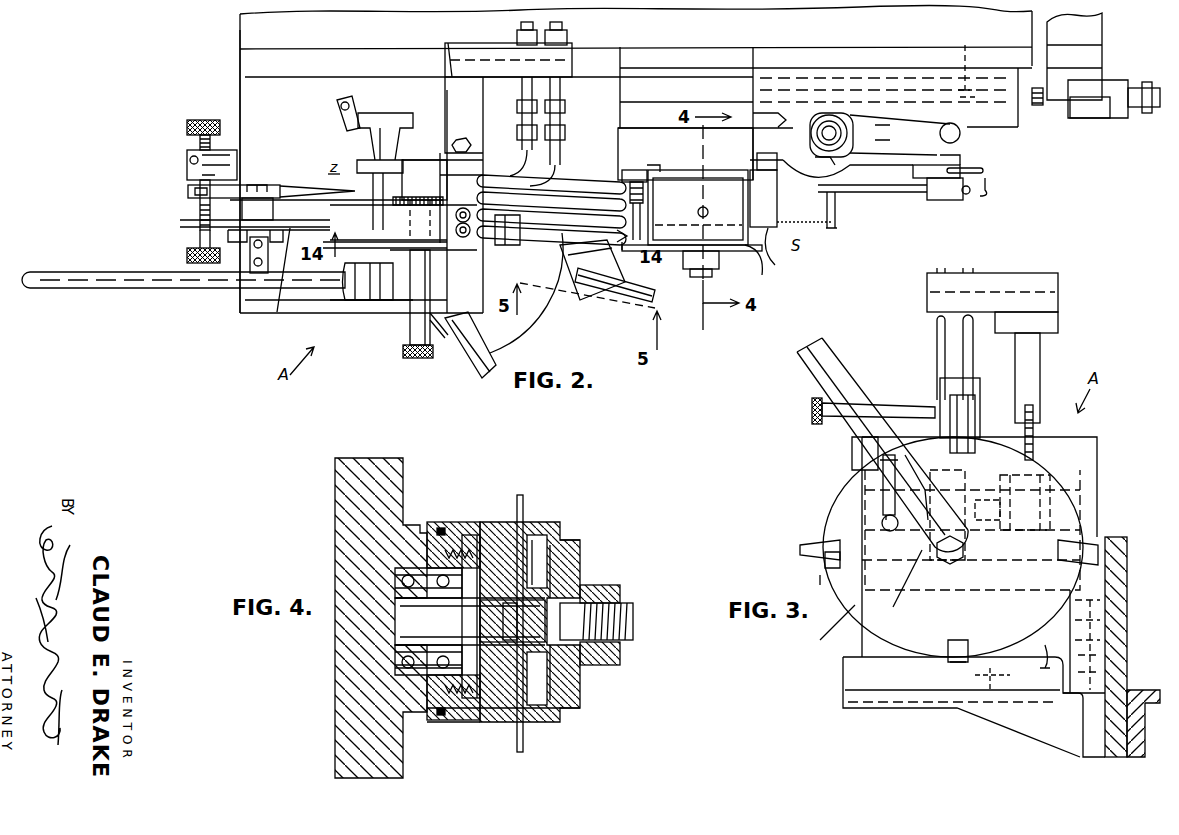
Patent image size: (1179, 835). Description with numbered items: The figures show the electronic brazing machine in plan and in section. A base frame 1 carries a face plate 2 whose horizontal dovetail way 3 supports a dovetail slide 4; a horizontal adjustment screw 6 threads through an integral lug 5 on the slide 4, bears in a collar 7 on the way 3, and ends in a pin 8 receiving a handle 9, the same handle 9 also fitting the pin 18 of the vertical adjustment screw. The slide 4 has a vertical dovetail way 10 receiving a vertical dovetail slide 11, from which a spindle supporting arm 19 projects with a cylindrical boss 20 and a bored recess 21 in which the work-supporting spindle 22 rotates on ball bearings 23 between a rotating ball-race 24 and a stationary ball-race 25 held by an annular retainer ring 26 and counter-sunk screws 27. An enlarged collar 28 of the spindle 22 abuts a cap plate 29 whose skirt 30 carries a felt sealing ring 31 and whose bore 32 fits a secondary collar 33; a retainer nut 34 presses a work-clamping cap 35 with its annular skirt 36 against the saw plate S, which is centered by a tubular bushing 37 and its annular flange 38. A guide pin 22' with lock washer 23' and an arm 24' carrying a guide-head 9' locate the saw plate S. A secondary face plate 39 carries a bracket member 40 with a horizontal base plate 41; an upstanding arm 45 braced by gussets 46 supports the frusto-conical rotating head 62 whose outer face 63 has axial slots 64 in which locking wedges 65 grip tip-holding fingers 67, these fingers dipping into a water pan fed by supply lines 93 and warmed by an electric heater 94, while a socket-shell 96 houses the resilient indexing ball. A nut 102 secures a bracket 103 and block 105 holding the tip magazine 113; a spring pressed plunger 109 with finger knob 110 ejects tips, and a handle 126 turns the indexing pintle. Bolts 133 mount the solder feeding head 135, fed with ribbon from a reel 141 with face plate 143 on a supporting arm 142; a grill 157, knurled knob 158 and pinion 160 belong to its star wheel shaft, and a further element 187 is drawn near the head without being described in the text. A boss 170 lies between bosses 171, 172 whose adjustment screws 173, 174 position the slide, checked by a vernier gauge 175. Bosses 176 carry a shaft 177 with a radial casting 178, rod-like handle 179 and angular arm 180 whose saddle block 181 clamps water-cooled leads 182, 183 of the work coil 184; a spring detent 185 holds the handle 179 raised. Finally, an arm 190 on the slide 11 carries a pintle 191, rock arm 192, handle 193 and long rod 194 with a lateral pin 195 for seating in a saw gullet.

In FIG. 2, the base frame 1 is at (1103, 26).
In FIG. 3, the base frame 1 is at (1136, 690).
In FIG. 2, the face plate 2 is at (1104, 51).
In FIG. 2, the dovetail way 3 is at (1108, 80).
In FIG. 2, the dovetail slide 4 is at (1005, 123).
In FIG. 2, the lug 5 is at (970, 59).
In FIG. 2, the horizontal adjustment screw 6 is at (1042, 108).
In FIG. 2, the collar 7 is at (1093, 120).
In FIG. 2, the pin 8 is at (1152, 80).
In FIG. 2, the handle or crank 9 is at (816, 188).
In FIG. 2, the guide-head 9' is at (624, 248).
In FIG. 2, the vertical dovetail way 10 is at (785, 120).
In FIG. 2, the vertical dovetail slide 11 is at (870, 190).
In FIG. 2, the diametral pin 18 is at (826, 162).
In FIG. 2, the spindle supporting arm 19 is at (633, 135).
In FIG. 4, the spindle supporting arm 19 is at (403, 471).
In FIG. 4, the cylindrical boss 20 is at (458, 524).
In FIG. 4, the circular recess 21 is at (395, 604).
In FIG. 2, the work-supporting spindle 22 is at (711, 275).
In FIG. 4, the work-supporting spindle 22 is at (613, 618).
In FIG. 2, the guide pin 22' is at (647, 191).
In FIG. 4, the ball bearings 23 is at (381, 581).
In FIG. 2, the lock washer 23' is at (675, 159).
In FIG. 4, the rotating ball-race 24 is at (380, 665).
In FIG. 2, the arm 24' is at (697, 317).
In FIG. 4, the stationary ball-race 25 is at (400, 673).
In FIG. 4, the annular retainer ring 26 is at (478, 530).
In FIG. 4, the counter-sunk screws 27 is at (472, 525).
In FIG. 4, the collar 28 is at (466, 612).
In FIG. 2, the cap plate 29 is at (791, 198).
In FIG. 4, the cap plate 29 is at (488, 720).
In FIG. 4, the skirt 30 is at (440, 716).
In FIG. 4, the felt sealing ring 31 is at (441, 525).
In FIG. 4, the bore 32 is at (522, 640).
In FIG. 4, the secondary collar 33 is at (537, 561).
In FIG. 2, the retainer nut 34 is at (759, 269).
In FIG. 4, the retainer nut 34 is at (622, 585).
In FIG. 2, the work-clamping cap 35 is at (732, 255).
In FIG. 4, the work-clamping cap 35 is at (574, 702).
In FIG. 4, the annular skirt 36 is at (535, 520).
In FIG. 4, the tubular bushing 37 is at (579, 581).
In FIG. 4, the annular flange 38 is at (576, 556).
In FIG. 2, the secondary face plate 39 is at (240, 62).
In FIG. 3, the secondary face plate 39 is at (1121, 560).
In FIG. 3, the bracket member 40 is at (1062, 620).
In FIG. 3, the horizontal base plate 41 is at (828, 625).
In FIG. 2, the angularly upstanding arm 45 is at (452, 90).
In FIG. 3, the angularly upstanding arm 45 is at (1045, 440).
In FIG. 2, the triangular gussets 46 is at (347, 73).
In FIG. 3, the triangular gussets 46 is at (1098, 450).
In FIG. 2, the rotating head 62 is at (512, 337).
In FIG. 3, the rotating head 62 is at (863, 630).
In FIG. 3, the annular outer face 63 is at (1100, 512).
In FIG. 3, the axial slots 64 is at (817, 588).
In FIG. 3, the locking wedge 65 is at (826, 566).
In FIG. 2, the tip-holding fingers 67 is at (472, 357).
In FIG. 3, the tip-holding fingers 67 is at (814, 541).
In FIG. 3, the supply lines 93 is at (1044, 646).
In FIG. 3, the electric heater 94 is at (977, 680).
In FIG. 2, the socket-shell 96 is at (436, 345).
In FIG. 3, the nut 102 is at (950, 575).
In FIG. 3, the bracket 103 is at (900, 585).
In FIG. 2, the block 105 is at (565, 296).
In FIG. 3, the block 105 is at (855, 456).
In FIG. 3, the plunger 109 is at (884, 505).
In FIG. 3, the finger knob 110 is at (881, 515).
In FIG. 2, the tip magazine 113 is at (656, 286).
In FIG. 3, the tip magazine 113 is at (830, 369).
In FIG. 3, the handle 126 is at (913, 540).
In FIG. 2, the bolts 133 is at (466, 237).
In FIG. 2, the solder feeding head 135 is at (466, 254).
In FIG. 3, the solder feeding head 135 is at (972, 386).
In FIG. 2, the reel 141 is at (300, 218).
In FIG. 2, the supporting arm 142 is at (265, 200).
In FIG. 2, the face plate 143 is at (274, 283).
In FIG. 2, the grill 157 is at (403, 345).
In FIG. 3, the grill 157 is at (873, 405).
In FIG. 2, the knurled knob 158 is at (418, 316).
In FIG. 3, the knurled knob 158 is at (811, 416).
In FIG. 2, the pinion 160 is at (440, 197).
In FIG. 2, the boss 170 is at (195, 191).
In FIG. 2, the boss 171 is at (196, 165).
In FIG. 2, the boss 172 is at (200, 228).
In FIG. 2, the adjustment screw 173 is at (199, 141).
In FIG. 2, the adjustment screw 174 is at (198, 248).
In FIG. 2, the vernier gauge 175 is at (344, 110).
In FIG. 2, the spaced bosses 176 is at (400, 125).
In FIG. 3, the spaced bosses 176 is at (1040, 480).
In FIG. 2, the shaft 177 is at (406, 187).
In FIG. 3, the shaft 177 is at (1086, 495).
In FIG. 2, the radial casting 178 is at (358, 300).
In FIG. 3, the radial casting 178 is at (984, 516).
In FIG. 2, the rod-like handle 179 is at (108, 288).
In FIG. 2, the angular arm 180 is at (458, 136).
In FIG. 3, the angular arm 180 is at (1040, 360).
In FIG. 2, the saddle block 181 is at (567, 140).
In FIG. 3, the saddle block 181 is at (1003, 276).
In FIG. 2, the water-cooled lead 182 is at (453, 50).
In FIG. 3, the water-cooled lead 182 is at (940, 272).
In FIG. 2, the water-cooled lead 183 is at (486, 50).
In FIG. 3, the water-cooled lead 183 is at (970, 272).
In FIG. 2, the work coil 184 is at (548, 248).
In FIG. 3, the work coil 184 is at (975, 418).
In FIG. 2, the spring detent 185 is at (250, 270).
In FIG. 3, the plate 187 is at (968, 472).
In FIG. 2, the horizontal arm 190 is at (985, 165).
In FIG. 2, the pintle 191 is at (940, 201).
In FIG. 2, the rock arm 192 is at (966, 195).
In FIG. 2, the handle 193 is at (976, 186).
In FIG. 2, the long rod 194 is at (886, 193).
In FIG. 2, the lateral pin 195 is at (831, 230).
In FIG. 4, the saw plate S is at (521, 493).